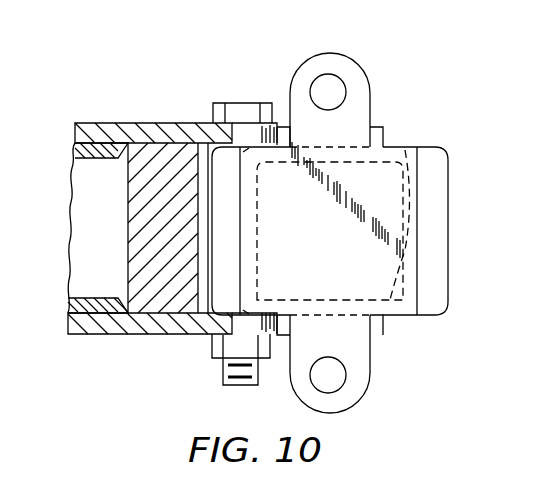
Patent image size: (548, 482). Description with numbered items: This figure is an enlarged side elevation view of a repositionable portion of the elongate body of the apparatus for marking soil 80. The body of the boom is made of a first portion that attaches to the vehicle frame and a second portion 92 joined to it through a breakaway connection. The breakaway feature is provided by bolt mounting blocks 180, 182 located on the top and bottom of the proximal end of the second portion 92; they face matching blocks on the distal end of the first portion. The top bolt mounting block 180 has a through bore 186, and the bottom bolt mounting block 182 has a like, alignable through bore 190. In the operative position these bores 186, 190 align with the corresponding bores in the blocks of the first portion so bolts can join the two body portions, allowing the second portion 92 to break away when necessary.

The apparatus for marking soil 80 is at (402, 122).
The second portion 92 is at (395, 314).
The bolt mounting block 180 is at (357, 63).
The bolt mounting block 182 is at (362, 400).
The through bore 186 is at (323, 75).
The through bore 190 is at (310, 380).